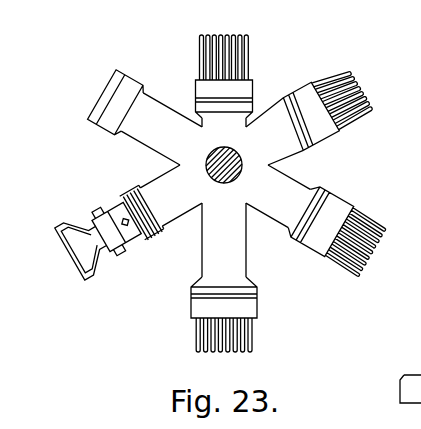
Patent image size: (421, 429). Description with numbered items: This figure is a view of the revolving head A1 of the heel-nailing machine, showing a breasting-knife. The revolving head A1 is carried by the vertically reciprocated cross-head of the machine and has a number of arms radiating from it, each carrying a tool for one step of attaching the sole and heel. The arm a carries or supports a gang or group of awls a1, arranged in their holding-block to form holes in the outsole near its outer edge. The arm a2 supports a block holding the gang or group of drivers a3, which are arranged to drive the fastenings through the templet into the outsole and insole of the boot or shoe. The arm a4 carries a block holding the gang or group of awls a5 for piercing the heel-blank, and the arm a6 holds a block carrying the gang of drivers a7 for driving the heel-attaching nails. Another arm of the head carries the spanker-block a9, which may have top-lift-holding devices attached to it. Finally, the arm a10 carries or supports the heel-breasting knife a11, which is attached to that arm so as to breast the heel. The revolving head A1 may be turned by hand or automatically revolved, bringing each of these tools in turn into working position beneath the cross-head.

The revolving head A1 is at (232, 170).
The arm a is at (224, 260).
The awls a1 is at (251, 331).
The arm a2 is at (215, 160).
The drivers a3 is at (332, 265).
The arm a4 is at (292, 123).
The awls a5 is at (349, 101).
The arm a6 is at (247, 104).
The drivers a7 is at (232, 62).
The spanker-block a9 is at (112, 89).
The arm a10 is at (161, 202).
The heel-breasting knife a11 is at (84, 270).